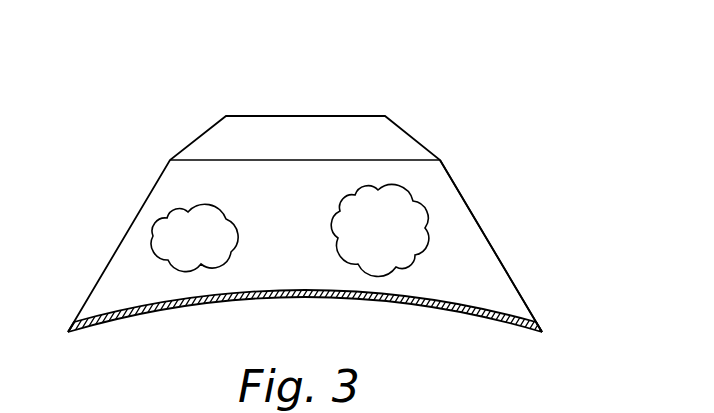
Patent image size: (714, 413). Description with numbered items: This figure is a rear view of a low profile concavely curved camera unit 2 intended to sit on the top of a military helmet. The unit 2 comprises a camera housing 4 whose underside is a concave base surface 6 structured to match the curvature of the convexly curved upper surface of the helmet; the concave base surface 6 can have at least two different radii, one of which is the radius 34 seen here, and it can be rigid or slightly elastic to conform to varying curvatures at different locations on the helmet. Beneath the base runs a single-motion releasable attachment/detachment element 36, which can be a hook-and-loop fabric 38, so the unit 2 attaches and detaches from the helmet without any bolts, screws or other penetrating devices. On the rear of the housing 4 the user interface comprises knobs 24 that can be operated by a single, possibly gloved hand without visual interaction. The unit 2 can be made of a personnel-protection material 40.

The low profile concavely curved camera unit 2 is at (458, 121).
The camera housing 4 is at (293, 114).
The personnel-protection material 40 is at (368, 132).
The knobs 24 is at (177, 213).
The radius 34 is at (325, 303).
The hook-and-loop fabric 38 is at (437, 312).
The concave base surface 6 is at (207, 307).
The single-motion releasable attachment/detachment element 36 is at (502, 308).